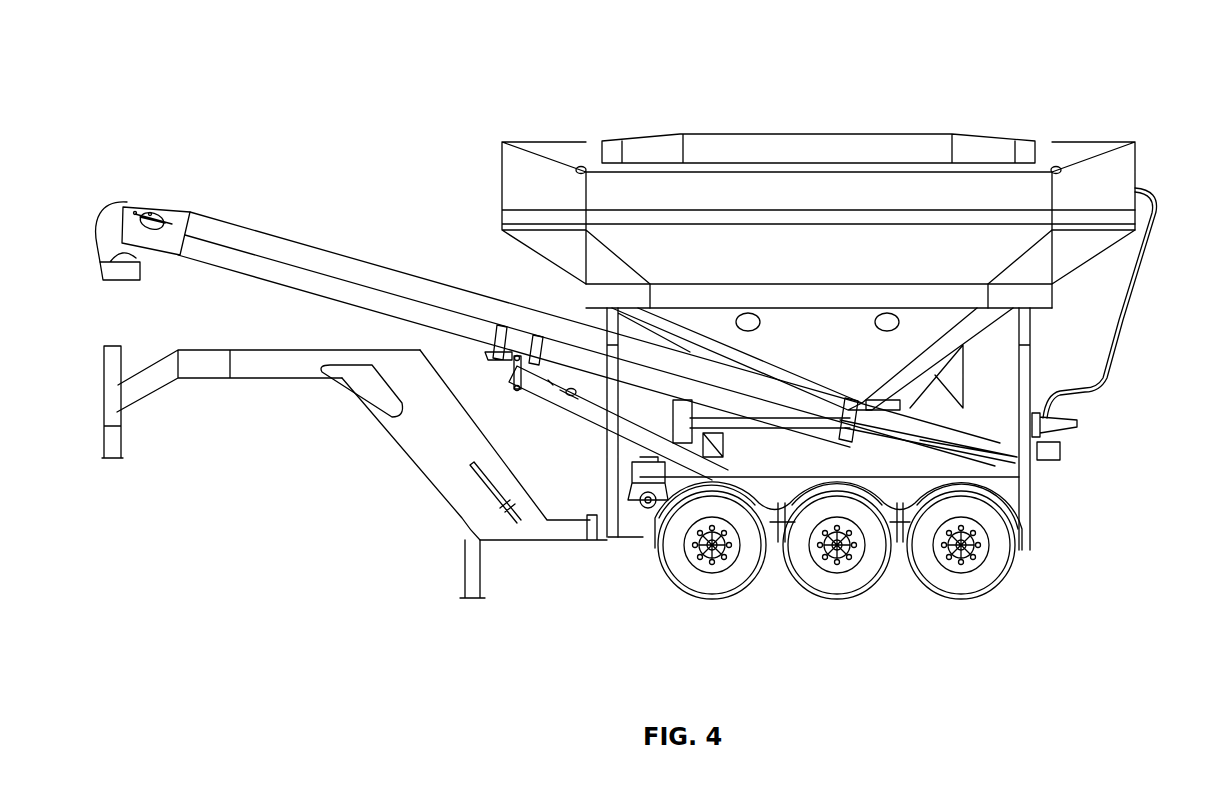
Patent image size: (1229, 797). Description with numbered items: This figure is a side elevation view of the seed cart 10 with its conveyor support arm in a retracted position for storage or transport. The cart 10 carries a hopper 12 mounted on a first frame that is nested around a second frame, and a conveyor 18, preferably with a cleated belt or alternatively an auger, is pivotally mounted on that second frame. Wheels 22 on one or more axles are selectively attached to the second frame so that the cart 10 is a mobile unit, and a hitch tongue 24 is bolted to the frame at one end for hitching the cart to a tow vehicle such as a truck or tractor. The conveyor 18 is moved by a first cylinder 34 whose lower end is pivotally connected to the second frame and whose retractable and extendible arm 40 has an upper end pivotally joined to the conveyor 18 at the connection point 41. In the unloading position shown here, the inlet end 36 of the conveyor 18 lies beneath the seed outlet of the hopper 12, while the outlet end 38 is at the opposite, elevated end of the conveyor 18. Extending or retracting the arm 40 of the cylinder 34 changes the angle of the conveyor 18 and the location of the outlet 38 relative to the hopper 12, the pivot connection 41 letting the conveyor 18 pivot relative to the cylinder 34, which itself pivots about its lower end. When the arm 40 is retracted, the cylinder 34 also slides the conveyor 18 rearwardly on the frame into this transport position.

The seed cart 10 is at (1118, 60).
The hopper 12 is at (513, 187).
The conveyor 18 is at (300, 250).
The wheels 22 is at (703, 598).
The hitch tongue 24 is at (287, 368).
The first cylinder 34 is at (600, 417).
The inlet end 36 is at (1010, 440).
The outlet end 38 is at (125, 282).
The arm 40 is at (563, 398).
The connection point 41 is at (517, 392).